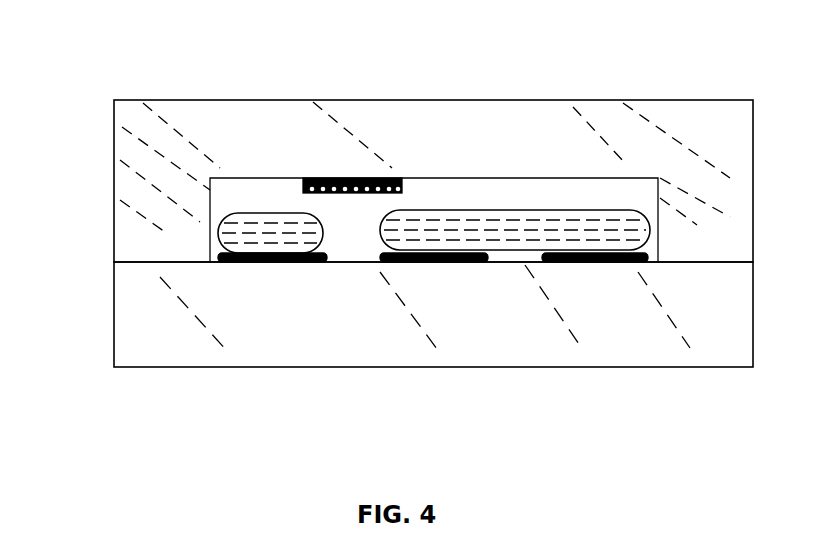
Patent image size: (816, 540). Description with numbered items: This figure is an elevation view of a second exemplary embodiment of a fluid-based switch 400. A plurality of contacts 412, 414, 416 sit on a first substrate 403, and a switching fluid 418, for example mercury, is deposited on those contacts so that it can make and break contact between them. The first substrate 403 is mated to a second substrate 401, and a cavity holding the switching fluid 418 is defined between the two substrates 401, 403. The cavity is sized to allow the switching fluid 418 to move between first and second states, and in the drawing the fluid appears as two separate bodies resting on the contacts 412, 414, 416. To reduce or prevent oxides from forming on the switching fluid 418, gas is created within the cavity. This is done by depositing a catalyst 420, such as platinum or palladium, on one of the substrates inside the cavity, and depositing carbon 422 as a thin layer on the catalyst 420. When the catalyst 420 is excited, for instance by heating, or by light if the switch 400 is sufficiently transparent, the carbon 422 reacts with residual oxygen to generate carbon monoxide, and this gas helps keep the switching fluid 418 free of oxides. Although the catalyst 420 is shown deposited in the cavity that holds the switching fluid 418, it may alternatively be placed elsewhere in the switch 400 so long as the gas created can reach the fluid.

The switch 400 is at (90, 250).
The second substrate 401 is at (722, 131).
The first substrate 403 is at (727, 291).
The contact 412 is at (280, 263).
The contact 414 is at (458, 263).
The contact 416 is at (600, 263).
The switching fluid 418 is at (285, 227).
The catalyst 420 is at (320, 178).
The carbon 422 is at (402, 188).